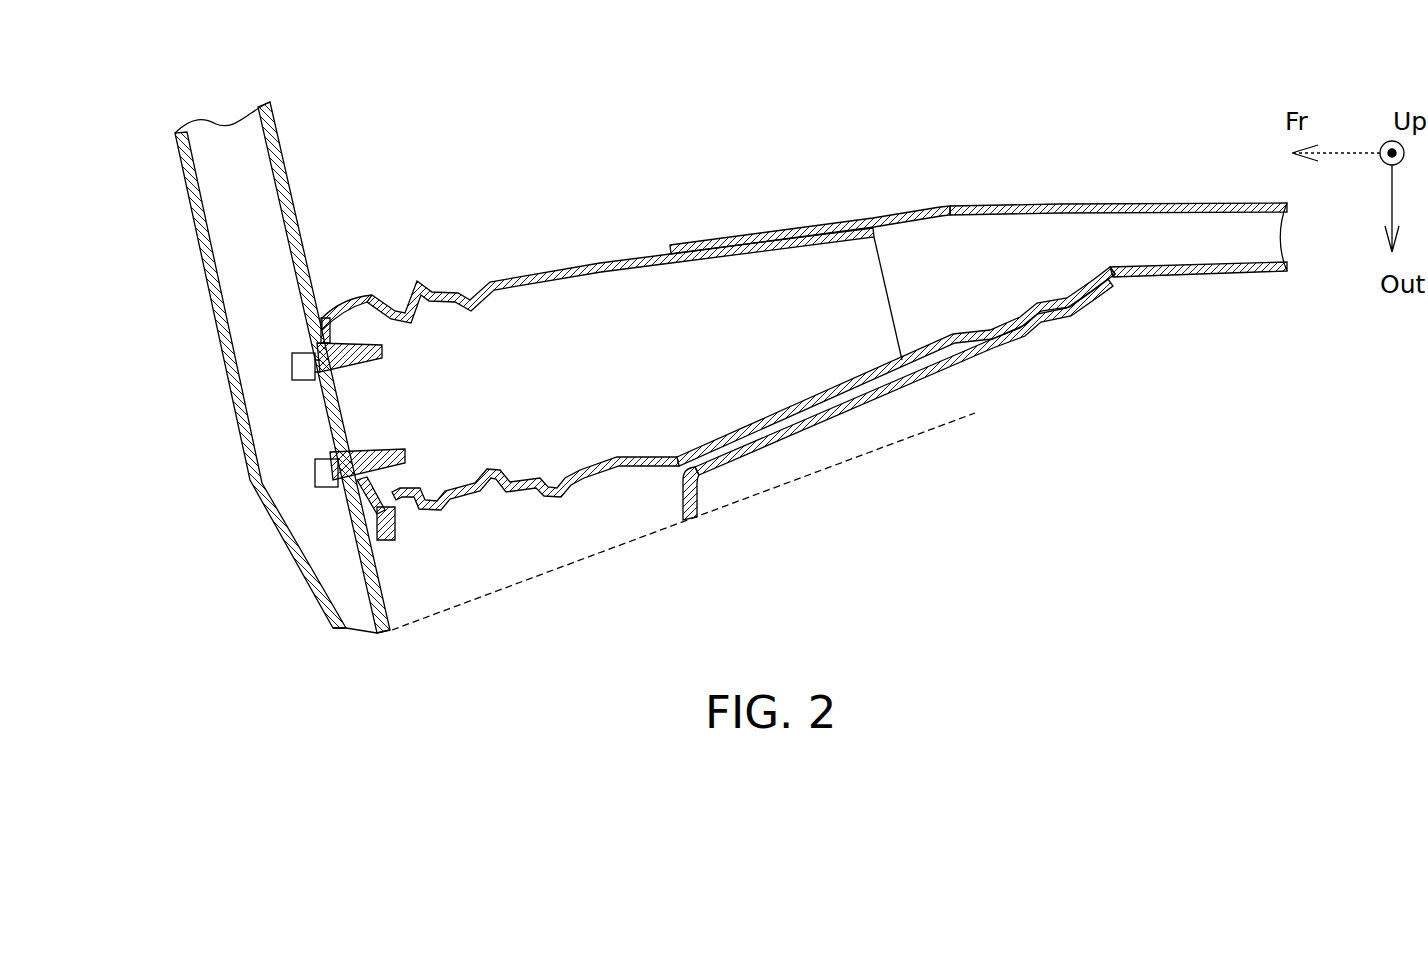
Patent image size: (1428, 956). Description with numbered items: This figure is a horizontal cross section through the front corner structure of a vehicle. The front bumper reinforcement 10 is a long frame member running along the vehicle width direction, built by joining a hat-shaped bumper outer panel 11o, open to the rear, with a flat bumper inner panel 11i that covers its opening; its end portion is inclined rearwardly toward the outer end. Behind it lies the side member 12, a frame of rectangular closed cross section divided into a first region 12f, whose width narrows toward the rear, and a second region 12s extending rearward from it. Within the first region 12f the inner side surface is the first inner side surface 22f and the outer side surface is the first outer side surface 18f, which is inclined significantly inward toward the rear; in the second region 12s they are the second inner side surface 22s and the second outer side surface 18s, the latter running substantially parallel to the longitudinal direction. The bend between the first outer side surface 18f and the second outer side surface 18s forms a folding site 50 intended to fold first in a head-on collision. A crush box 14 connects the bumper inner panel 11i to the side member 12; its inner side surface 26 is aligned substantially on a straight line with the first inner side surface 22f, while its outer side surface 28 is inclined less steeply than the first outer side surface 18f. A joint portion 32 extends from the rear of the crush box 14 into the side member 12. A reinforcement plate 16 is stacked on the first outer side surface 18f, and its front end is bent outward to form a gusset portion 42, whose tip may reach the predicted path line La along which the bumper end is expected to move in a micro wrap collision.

The front bumper reinforcement 10 is at (186, 437).
The bumper outer panel 11o is at (197, 252).
The bumper inner panel 11i is at (295, 214).
The side member 12 is at (806, 200).
The first region 12f is at (1110, 185).
The second region 12s is at (1269, 53).
The crush box 14 is at (560, 518).
The reinforcement plate 16 is at (837, 410).
The first outer side surface 18f is at (987, 330).
The second outer side surface 18s is at (1232, 273).
The first inner side surface 22f is at (902, 210).
The second inner side surface 22s is at (1221, 203).
The inner side surface 26 is at (470, 292).
The outer side surface 28 is at (518, 490).
The joint portion 32 is at (792, 404).
The gusset portion 42 is at (683, 507).
The folding site 50 is at (1113, 277).
The predicted path line La is at (703, 516).